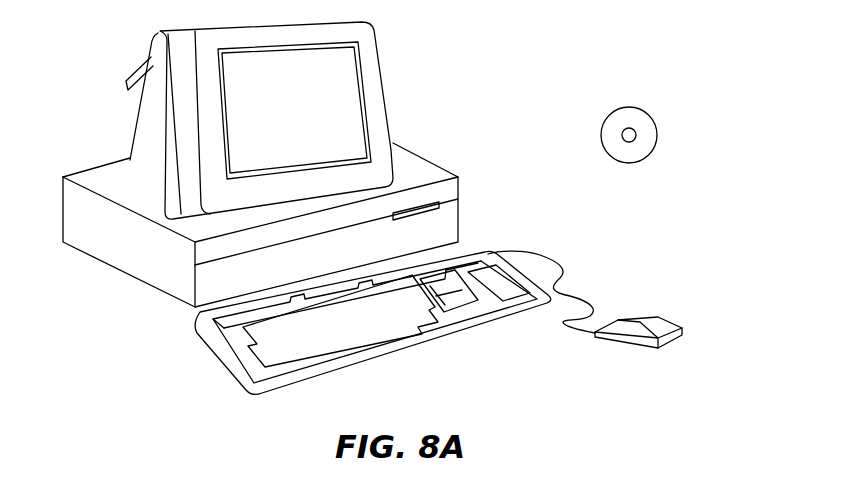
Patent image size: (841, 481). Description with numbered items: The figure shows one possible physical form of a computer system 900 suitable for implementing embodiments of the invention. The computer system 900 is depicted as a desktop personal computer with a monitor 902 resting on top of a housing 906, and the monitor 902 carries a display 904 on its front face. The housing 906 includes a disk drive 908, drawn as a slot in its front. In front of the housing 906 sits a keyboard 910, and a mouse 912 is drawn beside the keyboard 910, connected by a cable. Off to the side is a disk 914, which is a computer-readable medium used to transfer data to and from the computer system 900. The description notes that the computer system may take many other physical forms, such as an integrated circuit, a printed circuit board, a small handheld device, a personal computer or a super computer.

The computer system 900 is at (556, 23).
The monitor 902 is at (389, 125).
The display 904 is at (353, 78).
The housing 906 is at (165, 220).
The disk drive 908 is at (438, 203).
The keyboard 910 is at (370, 358).
The mouse 912 is at (680, 327).
The disk 914 is at (641, 108).